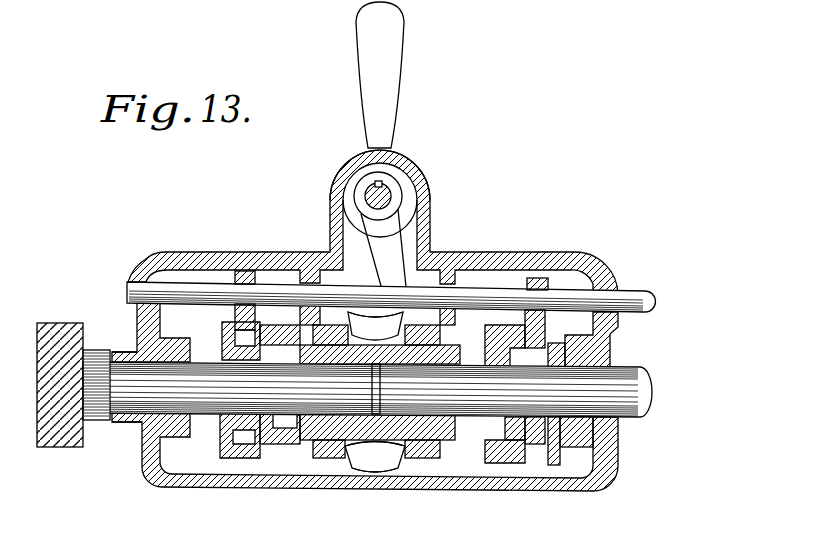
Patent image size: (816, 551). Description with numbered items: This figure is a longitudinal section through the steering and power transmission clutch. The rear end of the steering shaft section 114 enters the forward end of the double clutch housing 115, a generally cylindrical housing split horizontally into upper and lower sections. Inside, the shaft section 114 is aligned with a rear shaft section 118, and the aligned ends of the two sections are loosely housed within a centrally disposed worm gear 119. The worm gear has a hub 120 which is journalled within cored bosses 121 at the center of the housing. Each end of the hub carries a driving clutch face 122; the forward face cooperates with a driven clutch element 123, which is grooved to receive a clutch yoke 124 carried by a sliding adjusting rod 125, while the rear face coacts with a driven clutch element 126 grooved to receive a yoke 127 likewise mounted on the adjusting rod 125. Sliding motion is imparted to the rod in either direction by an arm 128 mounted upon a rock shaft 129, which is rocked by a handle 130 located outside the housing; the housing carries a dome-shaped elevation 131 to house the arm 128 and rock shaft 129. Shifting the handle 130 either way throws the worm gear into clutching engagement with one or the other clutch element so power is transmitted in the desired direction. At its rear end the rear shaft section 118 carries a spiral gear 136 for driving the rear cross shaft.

The shaft section 114 is at (622, 368).
The double clutch housing 115 is at (396, 340).
The rear shaft section 118 is at (133, 423).
The worm gear 119 is at (371, 455).
The hub 120 is at (322, 444).
The cored bosses 121 is at (290, 444).
The driving clutch face 122 is at (478, 296).
The driven clutch element 123 is at (513, 294).
The clutch yoke 124 is at (612, 330).
The sliding adjusting rod 125 is at (572, 292).
The driven clutch element 126 is at (273, 318).
The yoke 127 is at (224, 312).
The arm 128 is at (396, 226).
The rock shaft 129 is at (392, 190).
The handle 130 is at (392, 90).
The dome-shaped elevation 131 is at (406, 166).
The spiral gear 136 is at (60, 440).